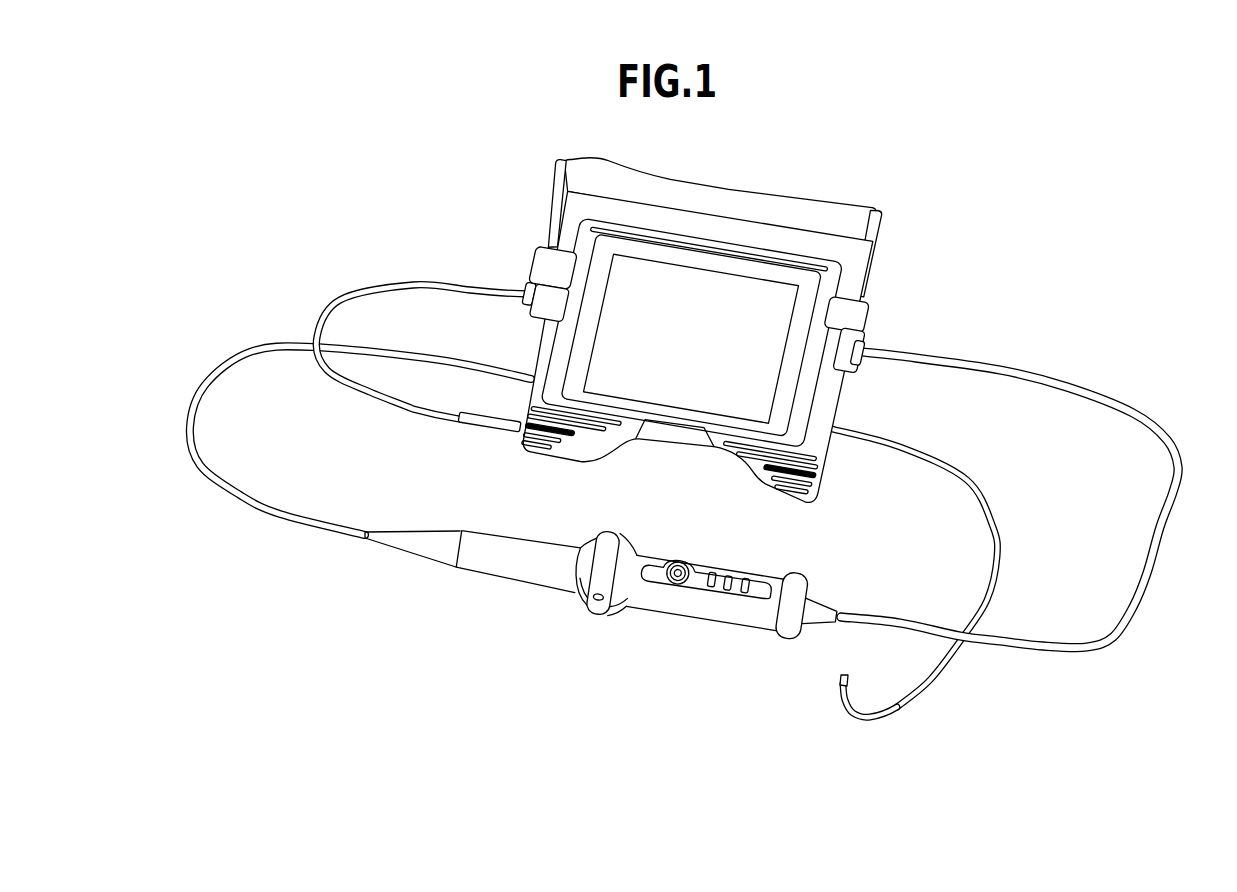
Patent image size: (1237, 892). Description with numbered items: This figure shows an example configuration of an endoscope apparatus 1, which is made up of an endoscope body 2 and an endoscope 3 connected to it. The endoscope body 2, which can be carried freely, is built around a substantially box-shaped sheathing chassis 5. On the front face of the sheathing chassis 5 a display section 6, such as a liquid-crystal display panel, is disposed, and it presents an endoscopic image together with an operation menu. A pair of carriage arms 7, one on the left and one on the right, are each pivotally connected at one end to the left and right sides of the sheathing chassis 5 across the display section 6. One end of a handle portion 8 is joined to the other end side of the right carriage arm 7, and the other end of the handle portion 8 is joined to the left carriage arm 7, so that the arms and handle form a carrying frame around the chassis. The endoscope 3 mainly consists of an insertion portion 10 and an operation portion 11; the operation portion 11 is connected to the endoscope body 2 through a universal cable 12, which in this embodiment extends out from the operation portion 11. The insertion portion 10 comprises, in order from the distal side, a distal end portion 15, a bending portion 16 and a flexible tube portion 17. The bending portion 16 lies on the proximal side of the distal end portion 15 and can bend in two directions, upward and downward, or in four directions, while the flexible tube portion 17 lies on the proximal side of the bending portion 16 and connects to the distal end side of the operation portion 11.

The endoscope apparatus 1 is at (312, 437).
The endoscope body 2 is at (493, 444).
The endoscope 3 is at (457, 518).
The sheathing chassis 5 is at (838, 402).
The display section 6 is at (688, 392).
The carriage arm 7 is at (553, 201).
The handle portion 8 is at (717, 193).
The insertion portion 10 is at (773, 778).
The operation portion 11 is at (596, 633).
The universal cable 12 is at (1145, 578).
The distal end portion 15 is at (842, 677).
The bending portion 16 is at (849, 702).
The flexible tube portion 17 is at (915, 703).